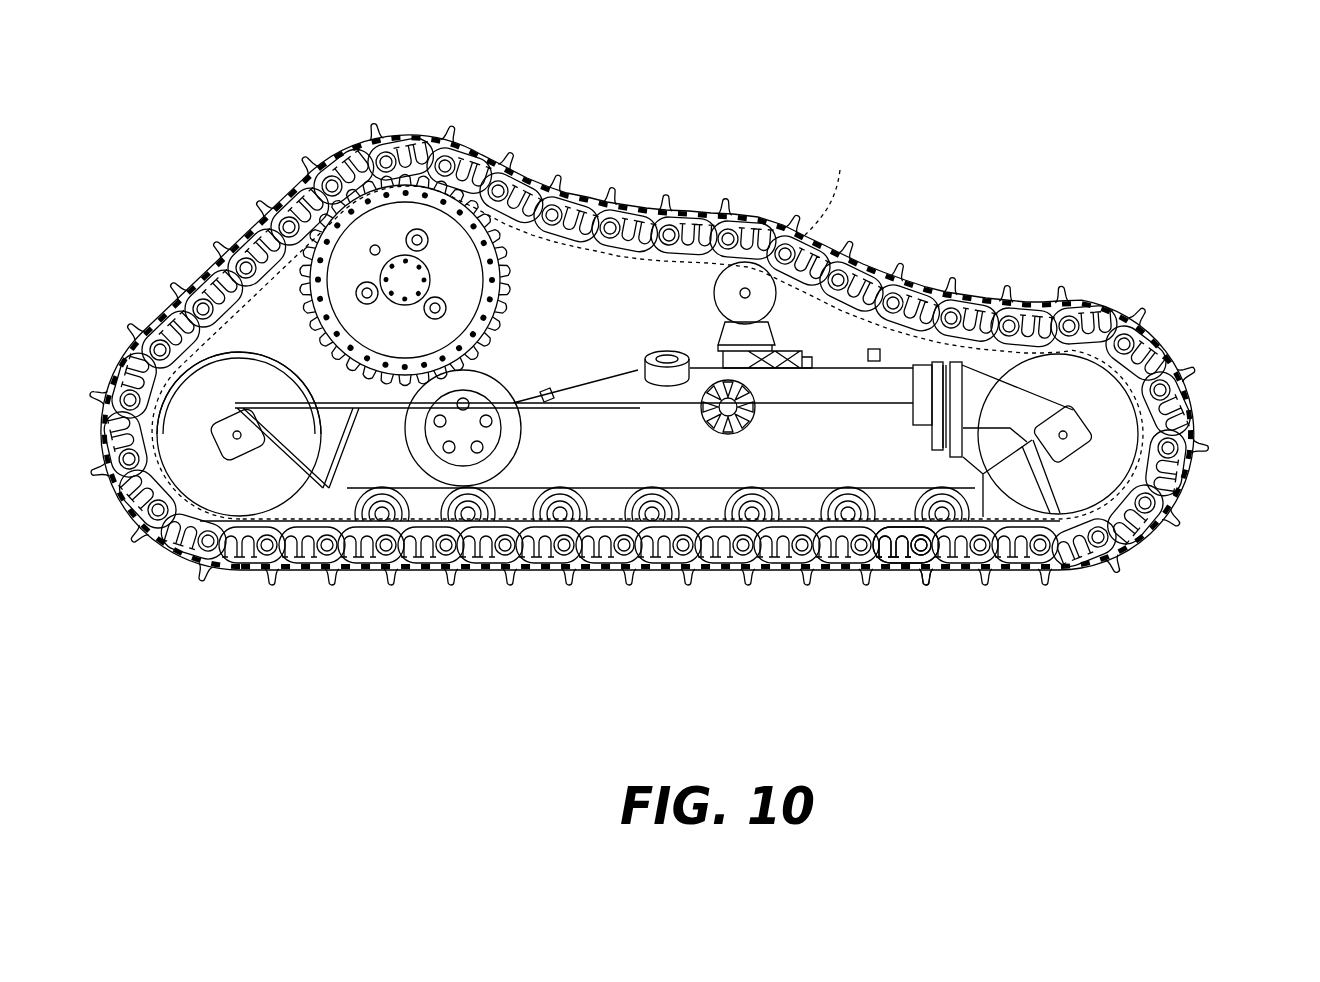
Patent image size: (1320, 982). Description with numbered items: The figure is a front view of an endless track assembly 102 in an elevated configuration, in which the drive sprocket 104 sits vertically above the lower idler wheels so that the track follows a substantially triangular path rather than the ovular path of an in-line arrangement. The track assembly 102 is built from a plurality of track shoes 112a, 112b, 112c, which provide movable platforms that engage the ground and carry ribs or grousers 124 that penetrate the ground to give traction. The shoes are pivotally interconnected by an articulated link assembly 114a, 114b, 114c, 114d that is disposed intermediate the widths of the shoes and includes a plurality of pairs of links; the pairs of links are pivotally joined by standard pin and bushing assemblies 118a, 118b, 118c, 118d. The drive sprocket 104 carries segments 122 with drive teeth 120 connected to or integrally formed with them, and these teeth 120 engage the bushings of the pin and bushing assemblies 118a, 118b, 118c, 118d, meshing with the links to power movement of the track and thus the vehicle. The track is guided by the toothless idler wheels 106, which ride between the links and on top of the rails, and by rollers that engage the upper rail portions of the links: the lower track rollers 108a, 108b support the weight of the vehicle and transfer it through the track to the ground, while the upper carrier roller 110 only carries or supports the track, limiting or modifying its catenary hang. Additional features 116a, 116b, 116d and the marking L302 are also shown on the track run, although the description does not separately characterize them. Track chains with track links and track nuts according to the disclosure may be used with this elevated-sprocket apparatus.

The track assembly 102 is at (982, 104).
The drive sprocket 104 is at (440, 240).
The idler wheel 106 is at (205, 385).
The track roller 108a is at (284, 550).
The track roller 108b is at (975, 568).
The carrier roller 110 is at (718, 286).
The track shoe 112a is at (352, 578).
The track shoe 112b is at (525, 576).
The track shoe 112c is at (757, 568).
The link assembly 114a is at (652, 568).
The link assembly 114b is at (948, 568).
The link assembly 114c is at (545, 193).
The link assembly 114d is at (206, 262).
The track link 116a is at (388, 578).
The track link 116b is at (457, 576).
The track link 116d is at (890, 275).
The pin and bushing assembly 118a is at (620, 543).
The pin and bushing assembly 118b is at (925, 545).
The pin and bushing assembly 118c is at (582, 243).
The pin and bushing assembly 118d is at (262, 288).
The teeth 120 is at (440, 280).
The segment 122 is at (488, 276).
The grouser 124 is at (208, 578).
The reference line L302 is at (833, 189).